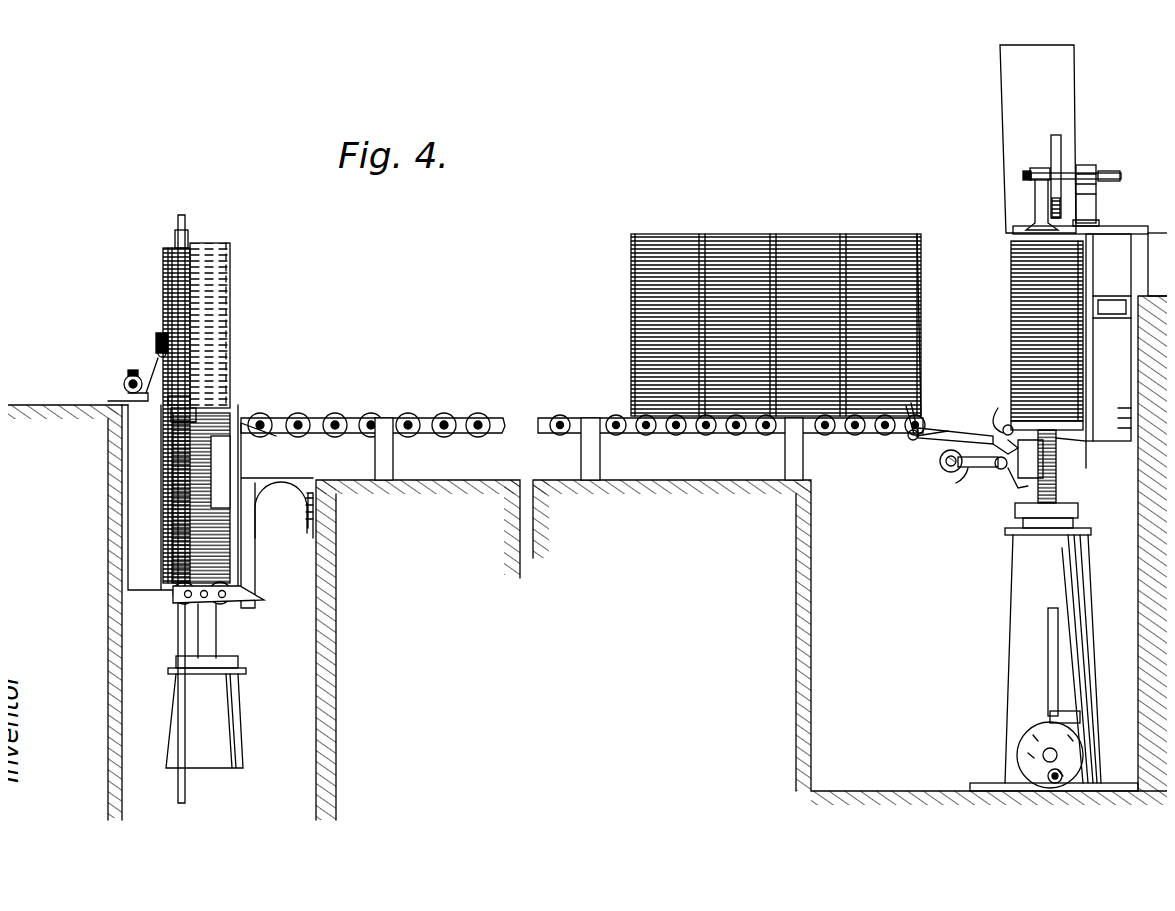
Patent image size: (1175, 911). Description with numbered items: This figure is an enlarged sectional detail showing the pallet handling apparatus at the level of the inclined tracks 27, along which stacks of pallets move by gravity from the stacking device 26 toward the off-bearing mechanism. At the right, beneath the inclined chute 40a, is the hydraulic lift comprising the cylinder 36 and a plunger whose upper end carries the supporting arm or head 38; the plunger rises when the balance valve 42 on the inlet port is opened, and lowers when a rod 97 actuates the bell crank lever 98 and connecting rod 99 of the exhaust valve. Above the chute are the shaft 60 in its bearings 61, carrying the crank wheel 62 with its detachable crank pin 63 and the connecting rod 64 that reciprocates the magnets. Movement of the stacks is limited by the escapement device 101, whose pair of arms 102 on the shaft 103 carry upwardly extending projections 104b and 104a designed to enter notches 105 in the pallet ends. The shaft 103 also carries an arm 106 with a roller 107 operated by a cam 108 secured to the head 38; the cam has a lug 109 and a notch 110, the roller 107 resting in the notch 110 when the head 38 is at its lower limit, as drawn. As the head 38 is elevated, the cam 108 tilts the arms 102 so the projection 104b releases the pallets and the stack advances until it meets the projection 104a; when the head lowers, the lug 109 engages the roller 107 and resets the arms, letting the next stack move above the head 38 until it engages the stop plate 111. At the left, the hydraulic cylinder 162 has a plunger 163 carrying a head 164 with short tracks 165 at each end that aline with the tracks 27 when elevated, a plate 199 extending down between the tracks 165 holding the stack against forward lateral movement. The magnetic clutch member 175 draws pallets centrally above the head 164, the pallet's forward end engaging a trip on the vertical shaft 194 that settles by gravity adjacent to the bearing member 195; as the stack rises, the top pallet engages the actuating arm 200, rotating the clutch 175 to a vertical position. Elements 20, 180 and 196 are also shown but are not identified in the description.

The stack of sheets 20 is at (167, 527).
The stacking device 26 is at (115, 375).
The tracks 27 is at (552, 412).
The cylinder 36 is at (1083, 578).
The supporting arm 38 is at (1050, 478).
The inclined chute 40a is at (1038, 139).
The balance valve 42 is at (1040, 775).
The shaft 60 is at (1108, 163).
The bearings 61 is at (1080, 160).
The crank wheel 62 is at (1047, 127).
The crank pin 63 is at (1017, 175).
The connecting rod 64 is at (1032, 160).
The rod 97 is at (1040, 667).
The bell crank lever 98 is at (1072, 709).
The connecting rod 99 is at (1050, 755).
The escapement device 101 is at (916, 420).
The arms 102 is at (940, 424).
The shaft 103 is at (940, 464).
The upwardly extending projection 104a is at (997, 415).
The upwardly extending projection 104b is at (906, 400).
The notches 105 is at (913, 258).
The arm 106 is at (955, 478).
The roller 107 is at (970, 460).
The cam 108 is at (1048, 452).
The lug 109 is at (1030, 448).
The notch 110 is at (1012, 479).
The stop plate 111 is at (1085, 268).
The hydraulic cylinder 162 is at (232, 735).
The plunger 163 is at (238, 662).
The head 164 is at (205, 627).
The short track 165 is at (245, 583).
The magnetic clutch member 175 is at (146, 331).
The plate 180 is at (165, 400).
The vertical shaft 194 is at (180, 775).
The bearing member 195 is at (163, 407).
The plate 196 is at (165, 418).
The plate 199 is at (247, 527).
The actuating arm 200 is at (148, 356).